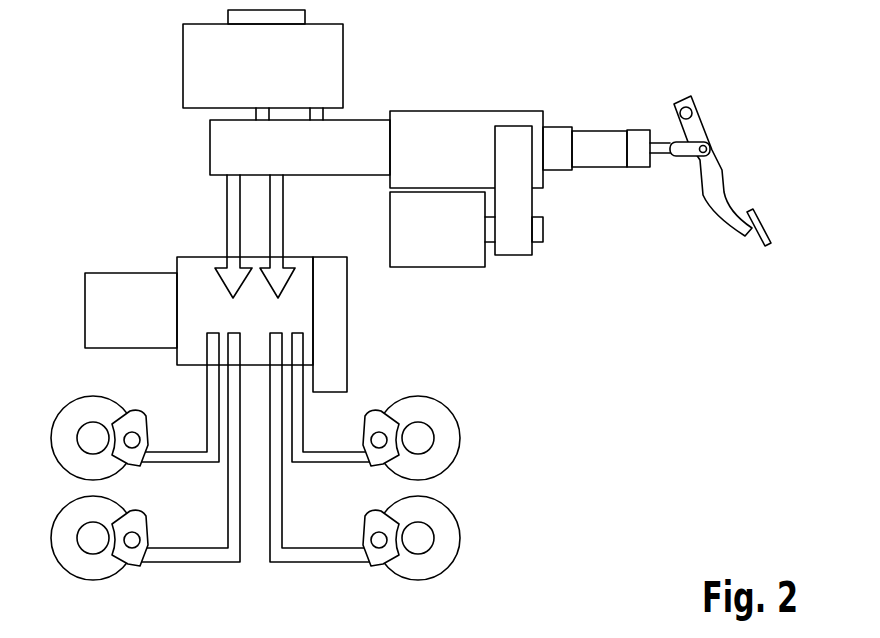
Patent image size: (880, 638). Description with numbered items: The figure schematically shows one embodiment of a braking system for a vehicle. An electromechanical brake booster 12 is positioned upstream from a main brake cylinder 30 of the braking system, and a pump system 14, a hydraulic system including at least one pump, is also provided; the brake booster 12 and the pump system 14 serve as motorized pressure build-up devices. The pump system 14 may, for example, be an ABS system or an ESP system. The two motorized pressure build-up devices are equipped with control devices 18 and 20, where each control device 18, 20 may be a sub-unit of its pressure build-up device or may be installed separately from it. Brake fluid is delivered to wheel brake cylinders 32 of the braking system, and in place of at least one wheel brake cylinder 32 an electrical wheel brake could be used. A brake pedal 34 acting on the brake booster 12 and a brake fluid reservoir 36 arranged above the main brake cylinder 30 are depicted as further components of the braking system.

The electromechanical brake booster 12 is at (450, 125).
The pump system 14 is at (198, 277).
The control device 18 is at (433, 250).
The control device 20 is at (100, 308).
The main brake cylinder 30 is at (226, 150).
The wheel brake cylinder 32 is at (138, 438).
The brake pedal 34 is at (712, 180).
The brake fluid reservoir 36 is at (195, 66).